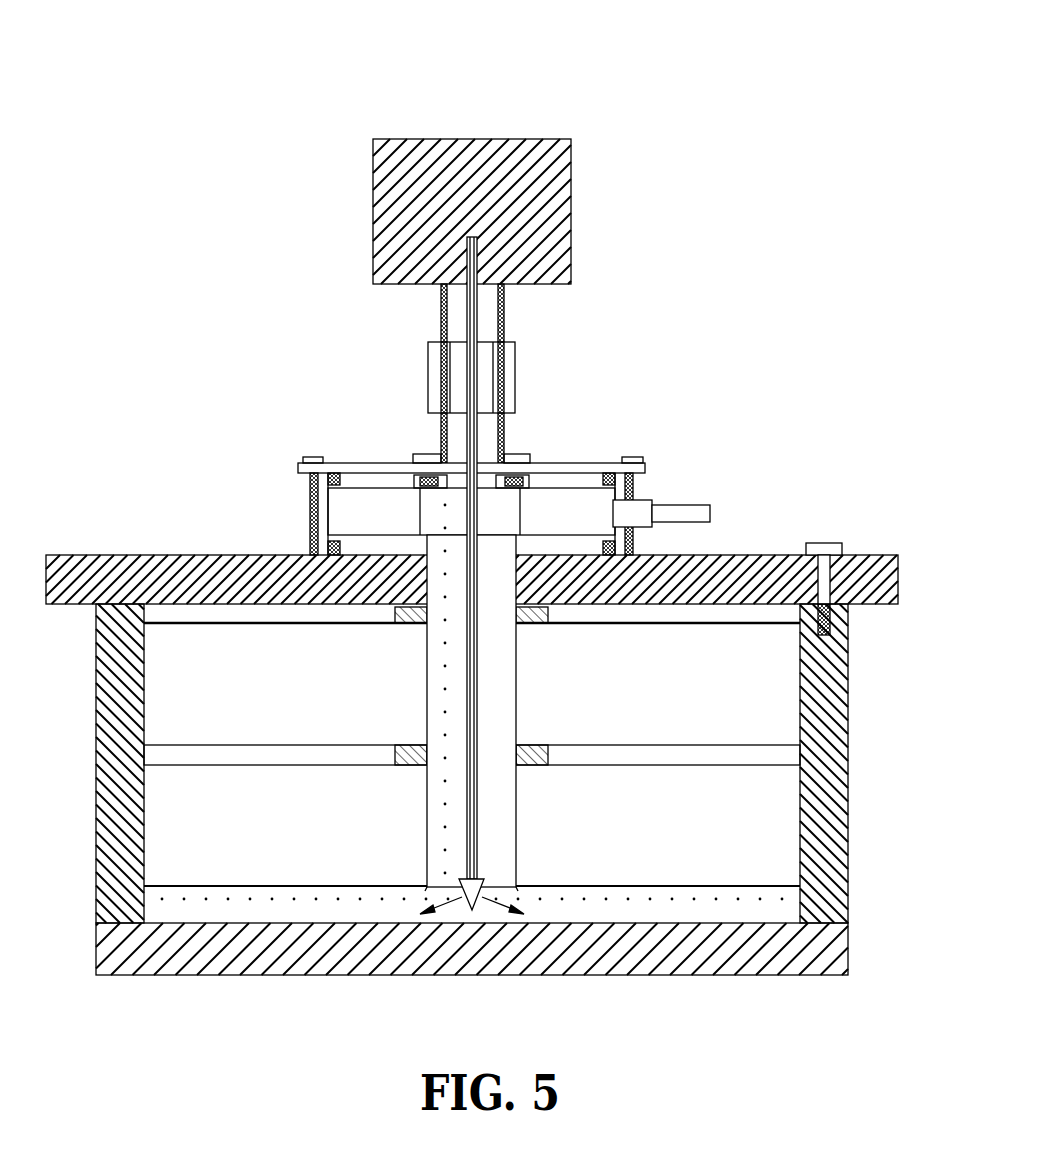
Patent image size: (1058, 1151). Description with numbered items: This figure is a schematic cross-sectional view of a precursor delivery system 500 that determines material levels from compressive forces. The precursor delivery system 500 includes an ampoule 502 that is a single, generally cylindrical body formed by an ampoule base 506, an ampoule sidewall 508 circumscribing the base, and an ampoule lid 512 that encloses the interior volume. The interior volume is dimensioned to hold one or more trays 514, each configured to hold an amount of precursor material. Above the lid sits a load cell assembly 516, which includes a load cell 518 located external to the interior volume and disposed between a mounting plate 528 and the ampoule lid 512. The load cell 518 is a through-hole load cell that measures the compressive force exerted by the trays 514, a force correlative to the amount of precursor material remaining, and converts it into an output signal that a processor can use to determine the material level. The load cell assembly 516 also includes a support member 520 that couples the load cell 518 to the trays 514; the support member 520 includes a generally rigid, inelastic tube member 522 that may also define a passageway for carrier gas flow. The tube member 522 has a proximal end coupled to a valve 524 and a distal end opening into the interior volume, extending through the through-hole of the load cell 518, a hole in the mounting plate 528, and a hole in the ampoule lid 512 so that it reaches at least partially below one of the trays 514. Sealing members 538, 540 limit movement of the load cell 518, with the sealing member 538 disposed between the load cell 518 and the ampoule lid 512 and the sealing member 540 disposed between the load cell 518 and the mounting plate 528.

The precursor delivery system 500 is at (475, 533).
The ampoule 502 is at (475, 757).
The ampoule base 506 is at (770, 960).
The ampoule sidewall 508 is at (122, 822).
The ampoule lid 512 is at (862, 552).
The trays 514 is at (302, 701).
The load cell assembly 516 is at (456, 586).
The load cell 518 is at (595, 507).
The support member 520 is at (433, 833).
The tube member 522 is at (500, 825).
The valve 524 is at (560, 192).
The mounting plate 528 is at (562, 466).
The sealing member 538 is at (338, 484).
The sealing member 540 is at (338, 542).